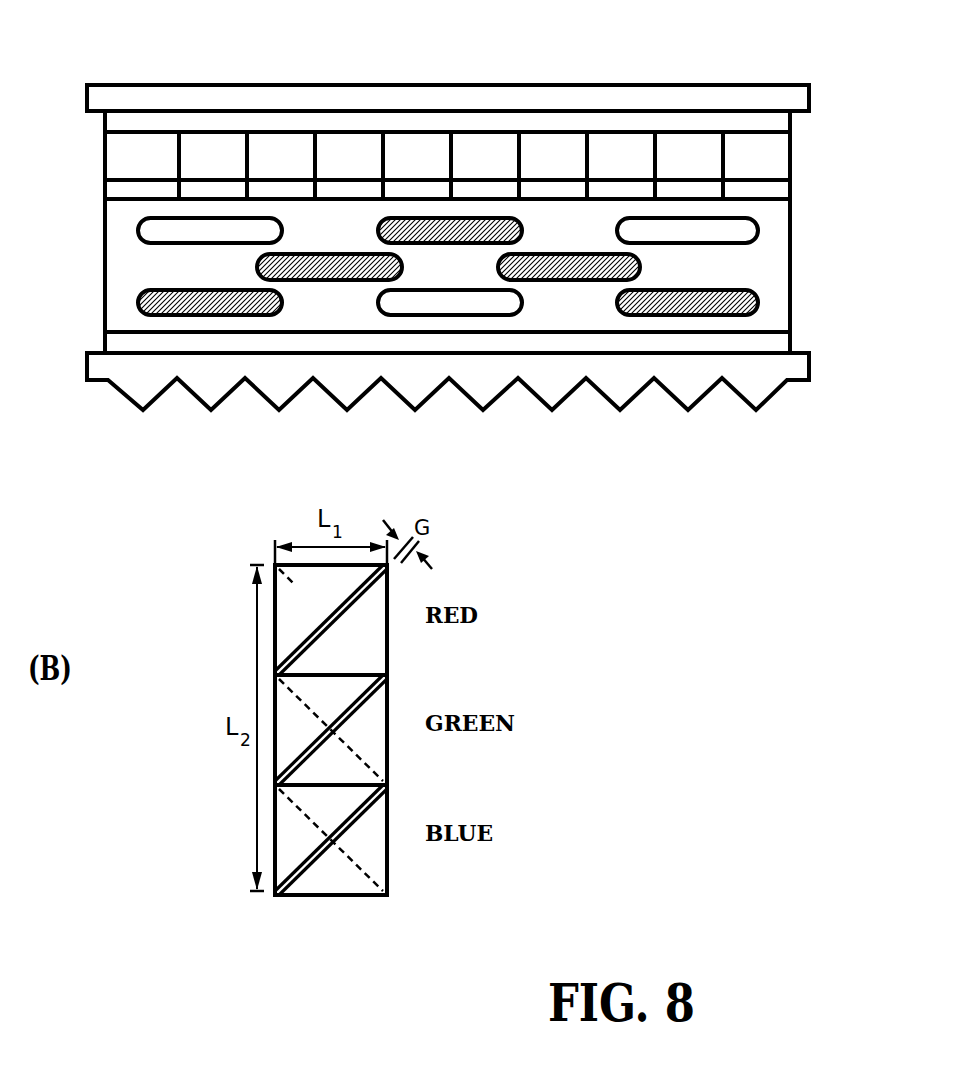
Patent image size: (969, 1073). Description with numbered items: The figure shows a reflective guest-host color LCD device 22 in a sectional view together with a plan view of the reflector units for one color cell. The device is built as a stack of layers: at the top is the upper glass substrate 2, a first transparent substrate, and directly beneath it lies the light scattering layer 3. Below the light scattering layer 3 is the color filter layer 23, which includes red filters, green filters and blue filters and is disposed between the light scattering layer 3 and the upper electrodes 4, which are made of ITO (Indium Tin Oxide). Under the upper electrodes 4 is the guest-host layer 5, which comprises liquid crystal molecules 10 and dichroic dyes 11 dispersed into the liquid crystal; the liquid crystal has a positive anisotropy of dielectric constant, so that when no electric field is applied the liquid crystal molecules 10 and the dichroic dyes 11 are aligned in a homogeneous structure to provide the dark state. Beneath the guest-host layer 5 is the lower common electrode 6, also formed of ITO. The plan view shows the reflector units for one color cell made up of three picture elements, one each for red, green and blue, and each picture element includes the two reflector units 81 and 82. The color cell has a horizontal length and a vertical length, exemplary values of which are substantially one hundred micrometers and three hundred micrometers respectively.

The reflective guest-host color LCD device 22 is at (512, 60).
The upper glass substrate 2 is at (800, 97).
The light scattering layer 3 is at (782, 125).
The color filter layer 23 is at (781, 165).
The upper electrodes 4 is at (780, 193).
The liquid crystal molecules 10 is at (745, 236).
The guest-host layer 5 is at (481, 265).
The dichroic dyes 11 is at (758, 306).
The lower common electrode 6 is at (770, 344).
The reflector unit 81 is at (328, 604).
The reflector unit 82 is at (366, 659).